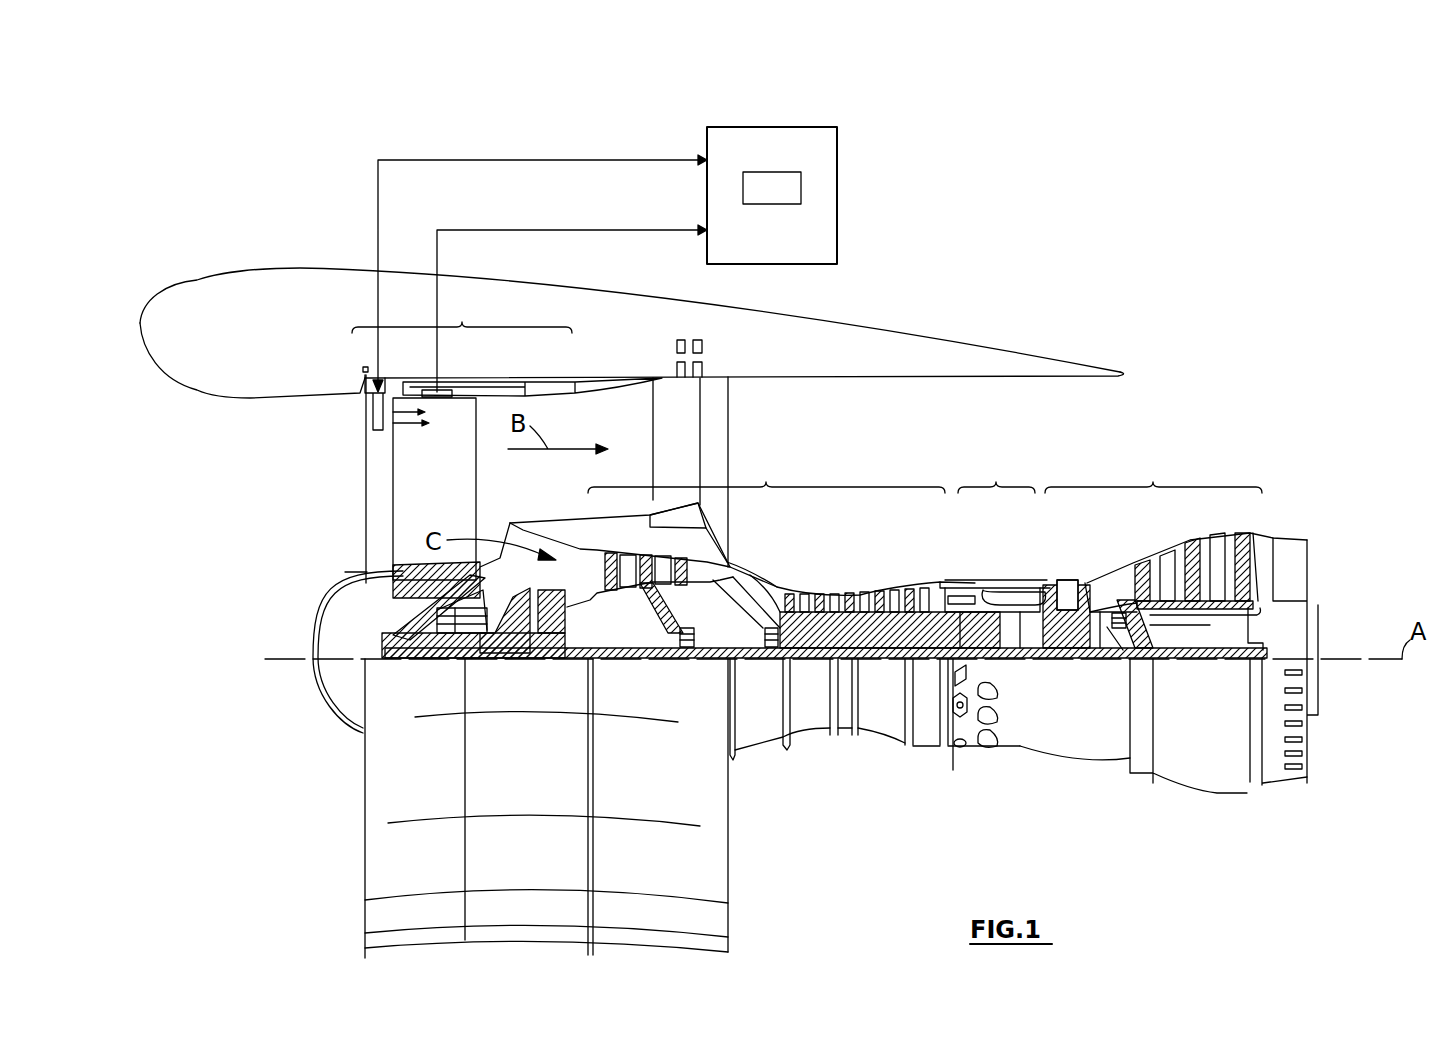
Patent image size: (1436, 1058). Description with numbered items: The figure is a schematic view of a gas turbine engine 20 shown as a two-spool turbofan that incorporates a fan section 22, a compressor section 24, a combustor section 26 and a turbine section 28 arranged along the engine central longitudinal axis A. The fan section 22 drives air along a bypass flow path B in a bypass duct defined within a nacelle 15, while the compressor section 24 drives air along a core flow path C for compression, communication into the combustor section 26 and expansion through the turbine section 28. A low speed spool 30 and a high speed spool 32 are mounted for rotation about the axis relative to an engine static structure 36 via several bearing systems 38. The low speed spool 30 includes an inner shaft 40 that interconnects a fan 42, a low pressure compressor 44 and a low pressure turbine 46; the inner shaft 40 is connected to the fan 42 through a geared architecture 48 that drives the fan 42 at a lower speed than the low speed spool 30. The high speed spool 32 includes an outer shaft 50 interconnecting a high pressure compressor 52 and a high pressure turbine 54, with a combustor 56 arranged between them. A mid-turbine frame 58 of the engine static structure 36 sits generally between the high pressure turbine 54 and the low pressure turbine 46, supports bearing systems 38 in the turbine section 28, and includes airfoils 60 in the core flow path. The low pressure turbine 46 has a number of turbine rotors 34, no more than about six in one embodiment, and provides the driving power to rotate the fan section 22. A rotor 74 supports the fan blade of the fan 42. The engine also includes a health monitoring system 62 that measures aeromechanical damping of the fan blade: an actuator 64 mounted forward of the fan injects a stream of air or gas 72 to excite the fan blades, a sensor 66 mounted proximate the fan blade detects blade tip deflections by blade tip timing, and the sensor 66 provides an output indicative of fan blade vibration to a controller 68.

The nacelle 15 is at (918, 348).
The gas turbine engine 20 is at (945, 270).
The fan section 22 is at (462, 315).
The compressor section 24 is at (766, 474).
The combustor section 26 is at (996, 474).
The turbine section 28 is at (1153, 474).
The low speed spool 30 is at (883, 668).
The high speed spool 32 is at (925, 600).
The turbine rotors 34 is at (1210, 625).
The engine static structure 36 is at (925, 750).
The bearing systems 38 is at (444, 660).
The inner shaft 40 is at (745, 660).
The fan 42 is at (447, 501).
The low pressure compressor 44 is at (662, 560).
The low pressure turbine 46 is at (1195, 555).
The geared architecture 48 is at (555, 660).
The outer shaft 50 is at (1007, 640).
The high pressure compressor 52 is at (858, 625).
The high pressure turbine 54 is at (1062, 578).
The combustor 56 is at (1000, 600).
The mid-turbine frame 58 is at (1103, 572).
The airfoils 60 is at (1133, 627).
The health monitoring system 62 is at (876, 99).
The actuator 64 is at (373, 412).
The sensor 66 is at (443, 392).
The controller 68 is at (801, 188).
The stream of air or gas 72 is at (408, 437).
The rotor 74 is at (339, 570).